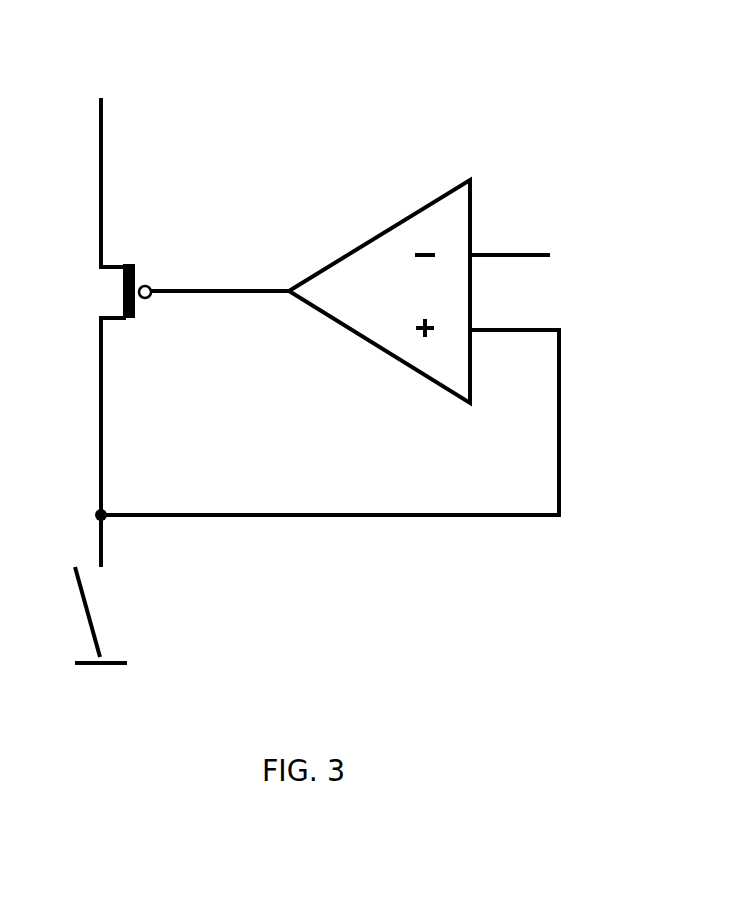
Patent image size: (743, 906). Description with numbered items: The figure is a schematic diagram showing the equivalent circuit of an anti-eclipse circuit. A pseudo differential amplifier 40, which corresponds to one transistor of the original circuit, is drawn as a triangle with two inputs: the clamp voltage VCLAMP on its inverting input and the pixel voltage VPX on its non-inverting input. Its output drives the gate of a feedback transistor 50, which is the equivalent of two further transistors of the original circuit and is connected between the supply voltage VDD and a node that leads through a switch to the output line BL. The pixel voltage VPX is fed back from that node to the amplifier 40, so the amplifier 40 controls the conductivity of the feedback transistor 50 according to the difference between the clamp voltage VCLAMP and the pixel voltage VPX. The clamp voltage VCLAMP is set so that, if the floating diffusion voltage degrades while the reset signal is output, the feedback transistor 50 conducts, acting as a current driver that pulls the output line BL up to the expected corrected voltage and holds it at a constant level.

The pseudo differential amplifier 40 is at (466, 157).
The feedback transistor 50 is at (104, 291).
The supply voltage VDD is at (99, 149).
The clamp voltage VCLAMP is at (584, 252).
The pixel voltage VPX is at (376, 424).
The output line BL is at (67, 623).